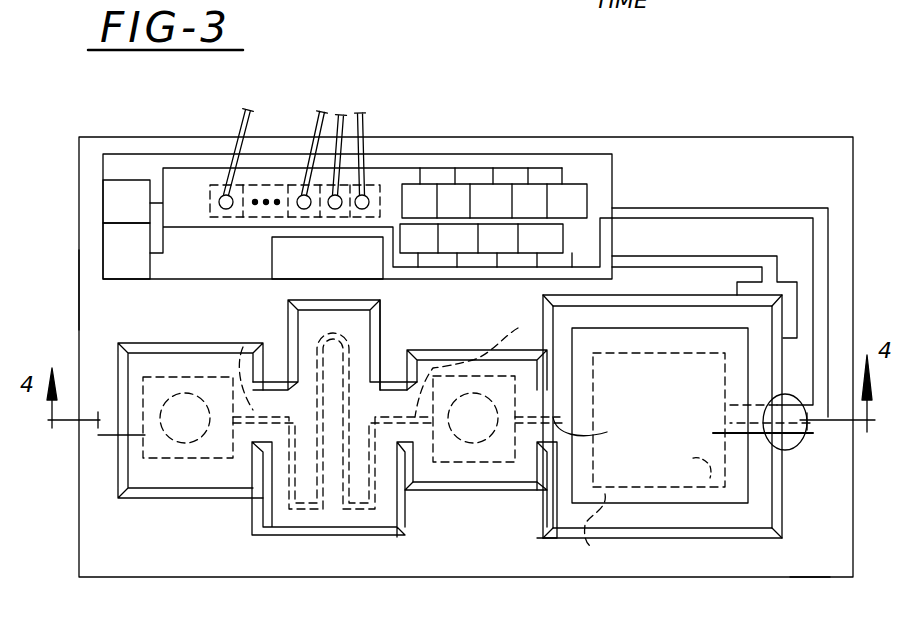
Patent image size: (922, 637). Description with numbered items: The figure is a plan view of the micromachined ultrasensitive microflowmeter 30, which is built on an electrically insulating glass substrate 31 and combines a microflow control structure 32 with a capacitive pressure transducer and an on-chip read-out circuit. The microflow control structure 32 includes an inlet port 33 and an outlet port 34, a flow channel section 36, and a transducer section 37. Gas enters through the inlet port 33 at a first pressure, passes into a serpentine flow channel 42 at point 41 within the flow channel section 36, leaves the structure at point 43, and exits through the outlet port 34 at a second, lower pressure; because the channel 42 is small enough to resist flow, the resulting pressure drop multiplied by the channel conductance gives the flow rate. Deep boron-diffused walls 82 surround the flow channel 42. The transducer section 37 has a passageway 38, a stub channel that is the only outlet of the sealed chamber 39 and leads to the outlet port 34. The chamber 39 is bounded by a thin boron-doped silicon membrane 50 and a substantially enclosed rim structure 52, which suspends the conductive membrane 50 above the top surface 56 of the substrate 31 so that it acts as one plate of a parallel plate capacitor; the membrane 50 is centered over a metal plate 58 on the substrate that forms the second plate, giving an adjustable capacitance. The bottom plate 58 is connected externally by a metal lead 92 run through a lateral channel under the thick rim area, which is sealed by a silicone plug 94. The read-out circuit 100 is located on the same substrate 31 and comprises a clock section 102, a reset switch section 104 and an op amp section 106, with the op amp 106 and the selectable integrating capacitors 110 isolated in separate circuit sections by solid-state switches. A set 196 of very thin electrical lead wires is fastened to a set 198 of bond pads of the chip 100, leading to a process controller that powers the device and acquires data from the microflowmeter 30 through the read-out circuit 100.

The microflowmeter 30 is at (103, 135).
The substrate 31 is at (79, 295).
The microflow control structure 32 is at (117, 550).
The inlet port 33 is at (195, 445).
The outlet port 34 is at (478, 445).
The flow channel section 36 is at (389, 352).
The transducer section 37 is at (542, 548).
The passageway 38 is at (594, 441).
The sealed chamber 39 is at (604, 529).
The point 41 is at (243, 347).
The serpentine flow channel 42 is at (262, 527).
The point 43 is at (473, 360).
The membrane 50 is at (683, 423).
The rim structure 52 is at (697, 318).
The top surface 56 is at (803, 557).
The metal plate 58 is at (683, 463).
The walls 82 is at (379, 327).
The metal lead 92 is at (813, 208).
The silicone plug 94 is at (797, 447).
The read-out circuit 100 is at (621, 240).
The clock section 102 is at (103, 196).
The reset switch section 104 is at (137, 279).
The op amp section 106 is at (295, 279).
The integrating capacitors 110 is at (530, 172).
The set of electrical lead wires 196 is at (382, 100).
The set of bond pads 198 is at (377, 178).